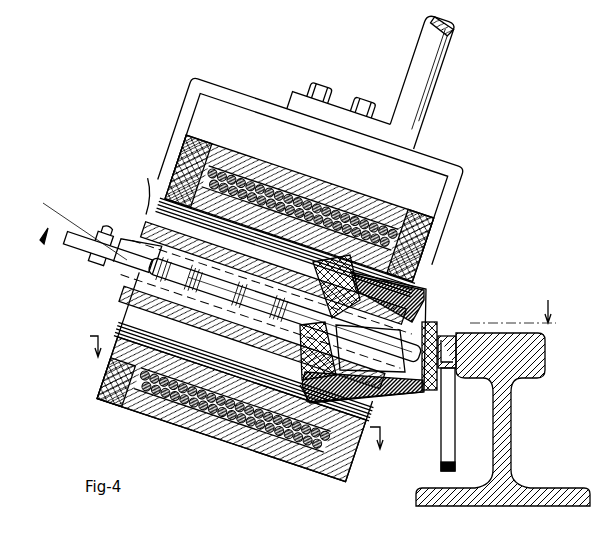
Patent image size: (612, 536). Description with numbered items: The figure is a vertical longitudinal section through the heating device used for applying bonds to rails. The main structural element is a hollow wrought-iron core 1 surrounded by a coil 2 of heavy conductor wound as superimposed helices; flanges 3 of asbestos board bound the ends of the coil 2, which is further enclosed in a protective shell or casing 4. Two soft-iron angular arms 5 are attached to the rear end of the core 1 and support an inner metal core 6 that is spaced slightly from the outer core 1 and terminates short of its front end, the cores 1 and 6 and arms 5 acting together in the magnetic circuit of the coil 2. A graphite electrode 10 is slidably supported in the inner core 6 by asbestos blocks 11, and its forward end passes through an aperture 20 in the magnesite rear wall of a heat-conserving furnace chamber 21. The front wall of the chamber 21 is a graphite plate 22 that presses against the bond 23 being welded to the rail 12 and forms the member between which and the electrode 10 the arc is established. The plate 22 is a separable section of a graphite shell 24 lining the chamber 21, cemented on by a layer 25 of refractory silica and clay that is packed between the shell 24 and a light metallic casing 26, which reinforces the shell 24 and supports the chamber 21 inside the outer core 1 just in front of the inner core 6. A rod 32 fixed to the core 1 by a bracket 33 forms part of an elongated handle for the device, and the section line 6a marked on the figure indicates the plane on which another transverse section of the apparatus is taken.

The hollow metal core 1 is at (120, 330).
The coil 2 is at (296, 175).
The flanges 3 is at (182, 147).
The protective shell or casing 4 is at (345, 180).
The angular arms 5 is at (113, 284).
The inner metal core 6 is at (162, 193).
The section line 6a- 6a is at (231, 403).
The electrode 10 is at (72, 230).
The blocks 11 is at (150, 248).
The rail 12 is at (546, 362).
The aperture 20 is at (362, 378).
The furnace chamber 21 is at (370, 348).
The graphite block or plate 22 is at (432, 325).
The bond 23 is at (458, 336).
The shell 24 is at (288, 302).
The layer of refractory material 25 is at (428, 300).
The metallic casing 26 is at (438, 270).
The rod 32 is at (445, 55).
The bracket 33 is at (190, 98).